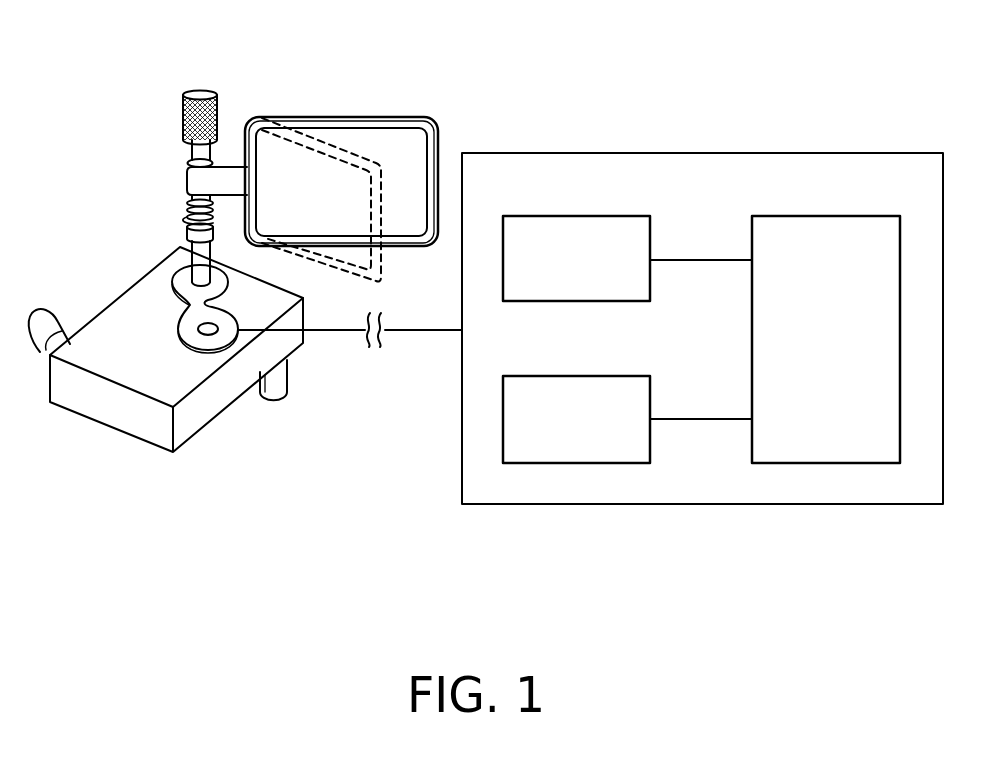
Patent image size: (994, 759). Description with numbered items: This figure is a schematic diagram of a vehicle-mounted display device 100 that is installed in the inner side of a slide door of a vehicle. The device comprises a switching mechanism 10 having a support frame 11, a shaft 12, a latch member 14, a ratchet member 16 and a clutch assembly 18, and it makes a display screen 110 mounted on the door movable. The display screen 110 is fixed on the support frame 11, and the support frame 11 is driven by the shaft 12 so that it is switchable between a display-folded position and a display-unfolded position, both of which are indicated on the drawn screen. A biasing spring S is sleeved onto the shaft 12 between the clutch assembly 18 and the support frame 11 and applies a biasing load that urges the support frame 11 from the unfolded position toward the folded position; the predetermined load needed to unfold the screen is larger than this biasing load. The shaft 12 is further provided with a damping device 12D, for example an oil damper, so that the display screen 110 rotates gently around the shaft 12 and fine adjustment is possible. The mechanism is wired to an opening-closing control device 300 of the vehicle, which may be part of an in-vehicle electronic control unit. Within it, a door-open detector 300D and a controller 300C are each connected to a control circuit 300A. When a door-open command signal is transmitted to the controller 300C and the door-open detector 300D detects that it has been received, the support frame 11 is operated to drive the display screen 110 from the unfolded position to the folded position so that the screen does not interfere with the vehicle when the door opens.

The switching mechanism 10 is at (86, 311).
The support frame 11 is at (212, 182).
The shaft 12 is at (198, 258).
The damping device 12D is at (198, 122).
The biasing spring S is at (187, 213).
The clutch assembly 18 is at (187, 228).
The latch member 14 is at (183, 285).
The ratchet member 16 is at (215, 335).
The vehicle-mounted display device 100 is at (378, 552).
The display screen 110 is at (342, 117).
The opening-closing control device 300 is at (825, 152).
The control circuit 300A is at (827, 214).
The controller 300C is at (576, 375).
The door-open detector 300D is at (576, 214).